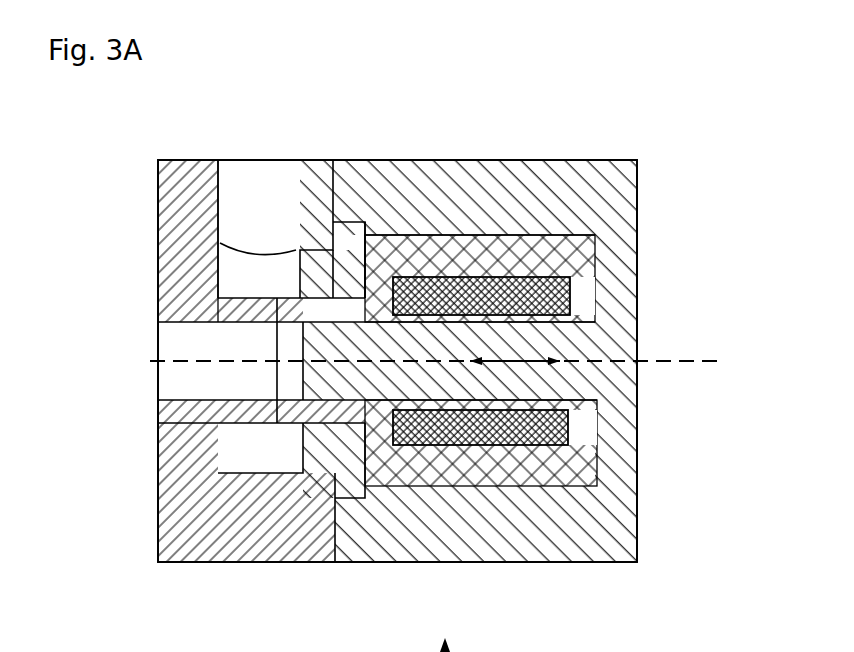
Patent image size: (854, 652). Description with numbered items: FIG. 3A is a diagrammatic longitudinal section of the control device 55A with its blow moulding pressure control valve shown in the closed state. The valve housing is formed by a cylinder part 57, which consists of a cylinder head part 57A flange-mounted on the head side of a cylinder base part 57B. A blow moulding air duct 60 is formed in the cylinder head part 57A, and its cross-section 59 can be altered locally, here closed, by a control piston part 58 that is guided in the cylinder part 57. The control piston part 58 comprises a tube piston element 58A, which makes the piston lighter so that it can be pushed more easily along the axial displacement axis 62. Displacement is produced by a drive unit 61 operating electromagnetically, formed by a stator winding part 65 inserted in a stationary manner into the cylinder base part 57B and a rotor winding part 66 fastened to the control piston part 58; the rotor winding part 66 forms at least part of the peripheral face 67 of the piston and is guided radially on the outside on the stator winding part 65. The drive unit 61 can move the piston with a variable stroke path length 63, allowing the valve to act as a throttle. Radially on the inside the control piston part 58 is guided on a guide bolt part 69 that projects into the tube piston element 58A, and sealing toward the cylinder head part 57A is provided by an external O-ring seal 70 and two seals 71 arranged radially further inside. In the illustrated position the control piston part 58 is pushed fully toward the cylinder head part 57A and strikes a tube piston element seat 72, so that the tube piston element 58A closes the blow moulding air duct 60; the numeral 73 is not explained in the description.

The control device 55A is at (687, 107).
The cylinder part 57 is at (548, 137).
The cylinder head part 57A is at (203, 538).
The cylinder base part 57B is at (631, 183).
The control piston part 58 is at (288, 404).
The tube piston element 58A is at (375, 413).
The cross-section 59 is at (258, 190).
The blow moulding air duct 60 is at (250, 160).
The drive unit 61 is at (472, 222).
The axial displacement axis 62 is at (700, 361).
The stroke path length 63 is at (524, 358).
The stator winding part 65 is at (584, 490).
The rotor winding part 66 is at (573, 425).
The peripheral face 67 is at (297, 448).
The guide bolt part 69 is at (365, 382).
The external O-ring seal 70 is at (300, 249).
The seals 71 is at (312, 326).
The tube piston element seat 72 is at (283, 414).
The coil 73 is at (601, 310).